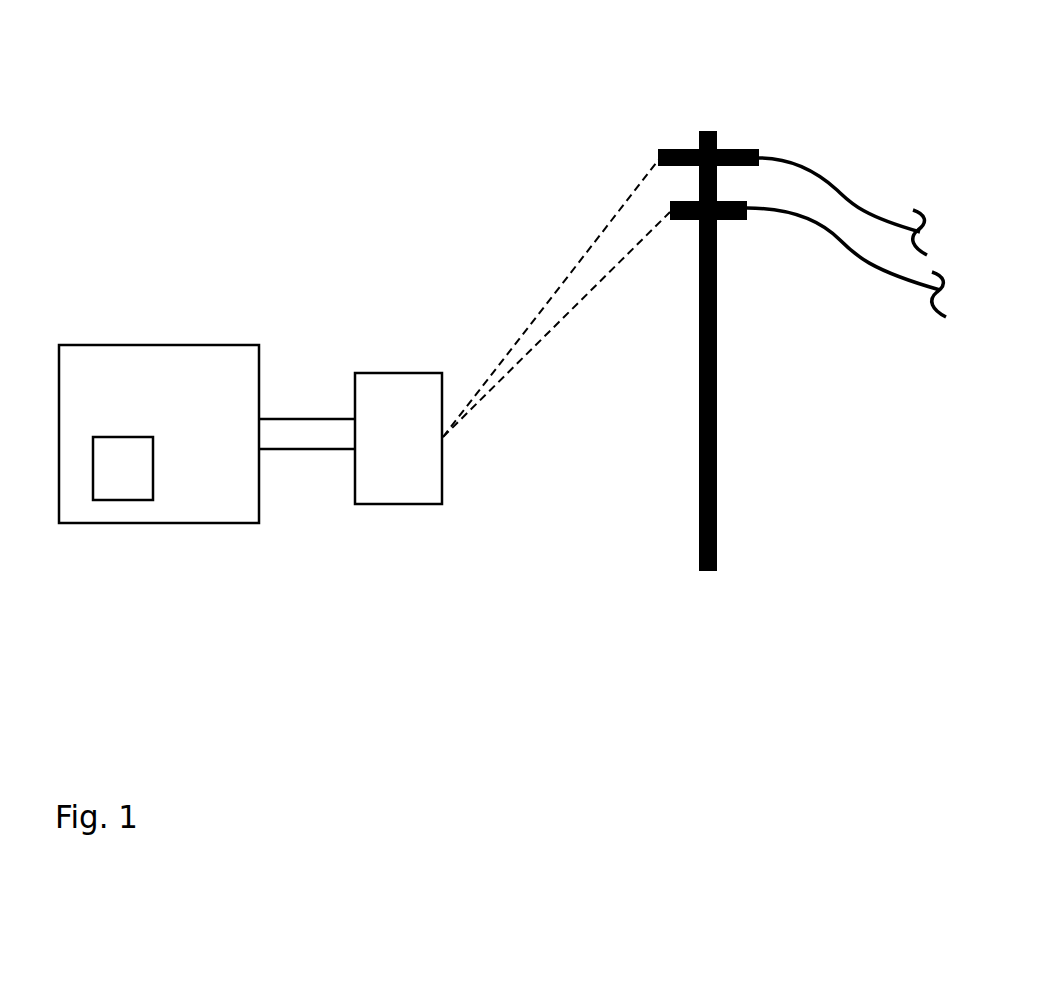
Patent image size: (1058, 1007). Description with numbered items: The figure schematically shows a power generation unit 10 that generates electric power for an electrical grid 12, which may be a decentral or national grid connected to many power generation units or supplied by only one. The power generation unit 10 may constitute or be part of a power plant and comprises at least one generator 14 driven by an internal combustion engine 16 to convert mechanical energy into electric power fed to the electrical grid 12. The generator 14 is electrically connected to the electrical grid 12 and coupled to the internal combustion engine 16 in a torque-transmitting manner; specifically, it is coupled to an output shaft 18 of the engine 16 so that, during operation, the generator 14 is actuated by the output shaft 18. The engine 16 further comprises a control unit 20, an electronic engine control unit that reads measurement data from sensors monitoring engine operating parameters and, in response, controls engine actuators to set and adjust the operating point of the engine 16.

The power generation unit 10 is at (122, 212).
The electrical grid 12 is at (700, 86).
The generator 14 is at (393, 390).
The internal combustion engine 16 is at (192, 357).
The output shaft 18 is at (305, 433).
The control unit 20 is at (137, 480).